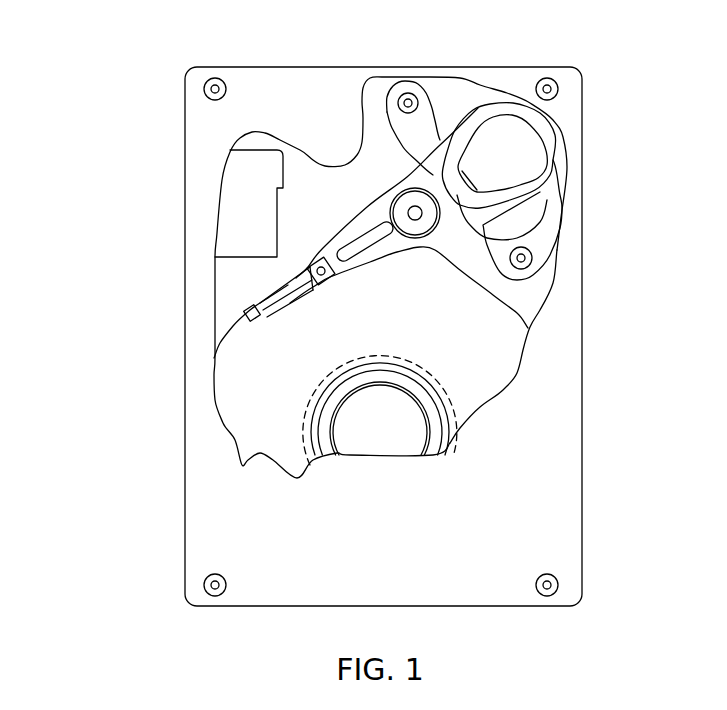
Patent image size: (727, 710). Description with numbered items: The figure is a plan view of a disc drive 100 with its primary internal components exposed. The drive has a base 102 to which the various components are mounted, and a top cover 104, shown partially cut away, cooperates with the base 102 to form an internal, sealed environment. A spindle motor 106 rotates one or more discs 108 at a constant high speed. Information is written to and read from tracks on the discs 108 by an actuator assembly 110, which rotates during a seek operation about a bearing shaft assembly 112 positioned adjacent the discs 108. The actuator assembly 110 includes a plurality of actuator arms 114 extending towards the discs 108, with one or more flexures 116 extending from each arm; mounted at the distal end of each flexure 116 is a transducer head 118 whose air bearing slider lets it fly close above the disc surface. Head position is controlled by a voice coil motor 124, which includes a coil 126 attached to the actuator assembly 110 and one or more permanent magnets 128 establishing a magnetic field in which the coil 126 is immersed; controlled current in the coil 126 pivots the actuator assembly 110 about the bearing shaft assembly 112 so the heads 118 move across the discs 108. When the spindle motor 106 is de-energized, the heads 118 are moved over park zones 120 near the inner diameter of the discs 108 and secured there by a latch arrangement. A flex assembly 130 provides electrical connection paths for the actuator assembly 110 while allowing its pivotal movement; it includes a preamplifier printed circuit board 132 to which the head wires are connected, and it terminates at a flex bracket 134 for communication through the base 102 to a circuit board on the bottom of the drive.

The disc drive 100 is at (159, 59).
The base 102 is at (227, 270).
The top cover 104 is at (227, 512).
The spindle motor 106 is at (377, 432).
The disc 108 is at (487, 381).
The actuator assembly 110 is at (393, 240).
The bearing shaft assembly 112 is at (417, 214).
The actuator arm 114 is at (371, 263).
The flexure 116 is at (276, 303).
The transducer head 118 is at (250, 322).
The park zone 120 is at (305, 432).
The voice coil motor 124 is at (453, 78).
The coil 126 is at (547, 157).
The permanent magnet 128 is at (435, 122).
The flex assembly 130 is at (352, 216).
The preamplifier printed circuit board 132 is at (392, 188).
The flex bracket 134 is at (242, 197).